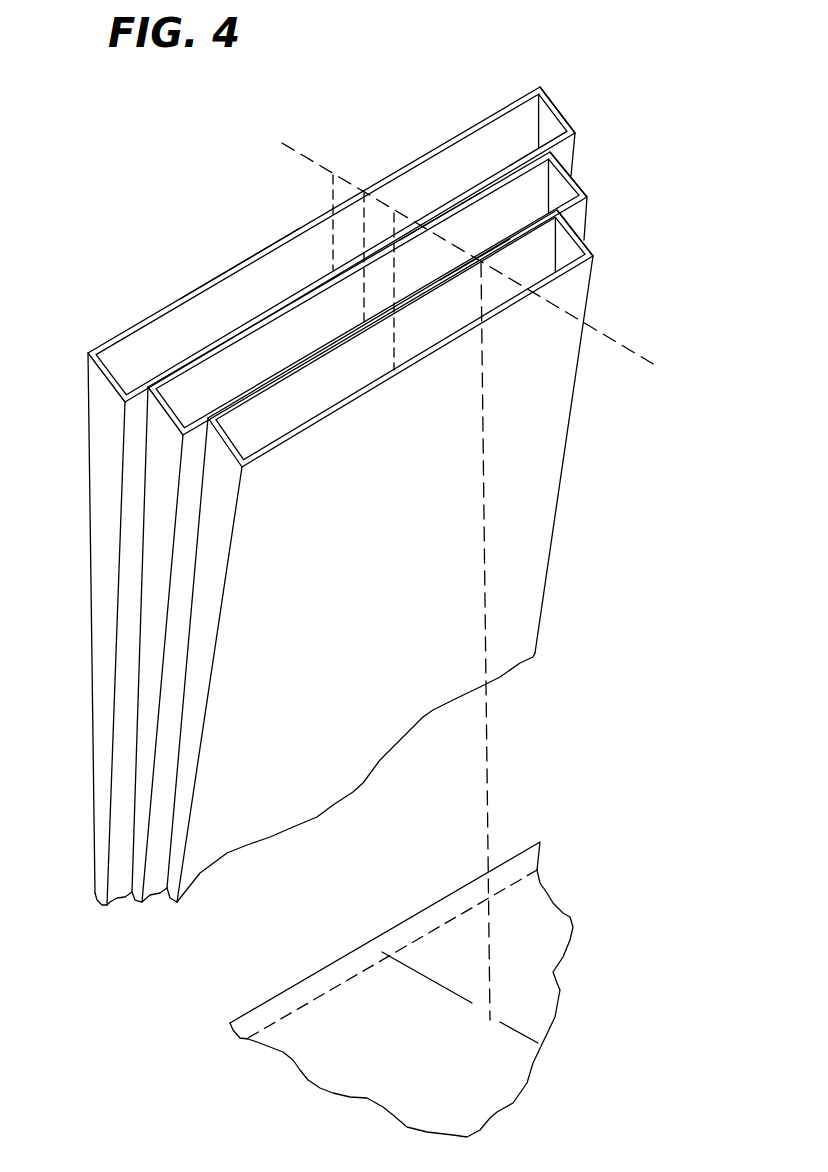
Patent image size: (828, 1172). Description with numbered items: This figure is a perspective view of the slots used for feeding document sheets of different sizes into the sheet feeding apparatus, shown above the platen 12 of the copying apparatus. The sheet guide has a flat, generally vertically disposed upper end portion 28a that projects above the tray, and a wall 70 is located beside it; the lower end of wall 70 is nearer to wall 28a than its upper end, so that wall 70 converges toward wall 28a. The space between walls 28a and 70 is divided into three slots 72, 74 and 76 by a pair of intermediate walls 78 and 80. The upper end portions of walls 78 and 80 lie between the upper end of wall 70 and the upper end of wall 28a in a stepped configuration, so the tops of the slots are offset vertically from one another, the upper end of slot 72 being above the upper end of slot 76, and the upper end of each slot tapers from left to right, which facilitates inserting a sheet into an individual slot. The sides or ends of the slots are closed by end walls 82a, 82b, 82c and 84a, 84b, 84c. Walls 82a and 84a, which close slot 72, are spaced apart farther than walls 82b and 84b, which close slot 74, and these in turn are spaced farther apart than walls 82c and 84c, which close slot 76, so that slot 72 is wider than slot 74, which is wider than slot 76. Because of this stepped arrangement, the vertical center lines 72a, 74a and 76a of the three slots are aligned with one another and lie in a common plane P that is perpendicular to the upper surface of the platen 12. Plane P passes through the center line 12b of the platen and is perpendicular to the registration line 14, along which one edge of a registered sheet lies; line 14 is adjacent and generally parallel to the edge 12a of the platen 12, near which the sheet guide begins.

The slot 72 is at (127, 352).
The slot 74 is at (210, 370).
The slot 76 is at (278, 398).
The wall 70 is at (274, 721).
The end wall 82a is at (102, 442).
The end wall 82b is at (153, 515).
The end wall 82c is at (205, 588).
The end wall 84a is at (564, 114).
The end wall 84b is at (582, 172).
The end wall 84c is at (597, 238).
The upper end portion of sheet guide 28a is at (233, 268).
The intermediate wall 78 is at (445, 206).
The intermediate wall 80 is at (477, 256).
The vertical center line of slot 72a is at (333, 197).
The vertical center line of slot 74a is at (363, 243).
The vertical center line of slot 76a is at (393, 347).
The plane P is at (483, 477).
The platen 12 is at (418, 1063).
The edge of platen 12a is at (283, 992).
The registration line 14 is at (348, 982).
The center line of platen 12b is at (467, 1005).